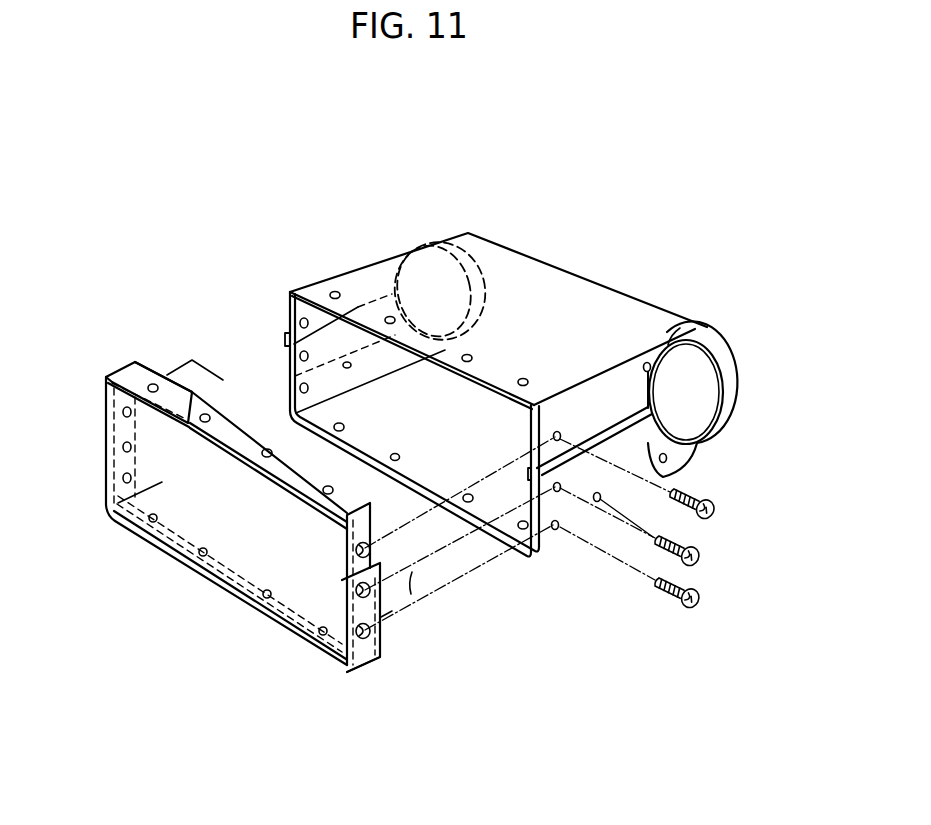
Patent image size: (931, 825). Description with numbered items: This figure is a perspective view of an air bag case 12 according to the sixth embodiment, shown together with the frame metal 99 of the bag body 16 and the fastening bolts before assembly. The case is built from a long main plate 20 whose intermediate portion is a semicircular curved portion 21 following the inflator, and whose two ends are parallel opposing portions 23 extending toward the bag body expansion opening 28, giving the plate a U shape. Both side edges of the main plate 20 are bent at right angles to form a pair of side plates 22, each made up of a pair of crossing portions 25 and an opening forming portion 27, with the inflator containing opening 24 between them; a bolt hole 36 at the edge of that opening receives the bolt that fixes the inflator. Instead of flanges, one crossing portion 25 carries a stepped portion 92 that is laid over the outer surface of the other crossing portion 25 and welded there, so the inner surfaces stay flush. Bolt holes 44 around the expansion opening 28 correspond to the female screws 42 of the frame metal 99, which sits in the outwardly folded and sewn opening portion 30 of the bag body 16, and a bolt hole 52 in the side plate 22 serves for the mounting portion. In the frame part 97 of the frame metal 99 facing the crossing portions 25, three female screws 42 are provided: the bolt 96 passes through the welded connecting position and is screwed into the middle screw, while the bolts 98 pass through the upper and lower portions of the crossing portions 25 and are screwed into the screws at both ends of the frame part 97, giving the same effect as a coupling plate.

The air bag case 12 is at (468, 222).
The bag body 16 is at (400, 615).
The main plate 20 is at (640, 300).
The curved portion 21 is at (665, 313).
The side plates 22 is at (288, 308).
The opposing portions 23 is at (543, 297).
The inflator containing opening 24 is at (706, 403).
The crossing portions 25 is at (372, 363).
The opening forming portion 27 is at (730, 365).
The bag body expansion opening 28 is at (357, 446).
The opening portion 30 is at (385, 640).
The bolt hole 36 is at (668, 360).
The female screws 42 is at (355, 548).
The bolt holes 44 is at (405, 455).
The bolt hole 52 is at (600, 499).
The stepped portion 92 is at (284, 341).
The bolt 96 is at (697, 543).
The frame part 97 is at (372, 530).
The bolts 98 is at (702, 497).
The frame metal 99 is at (256, 433).